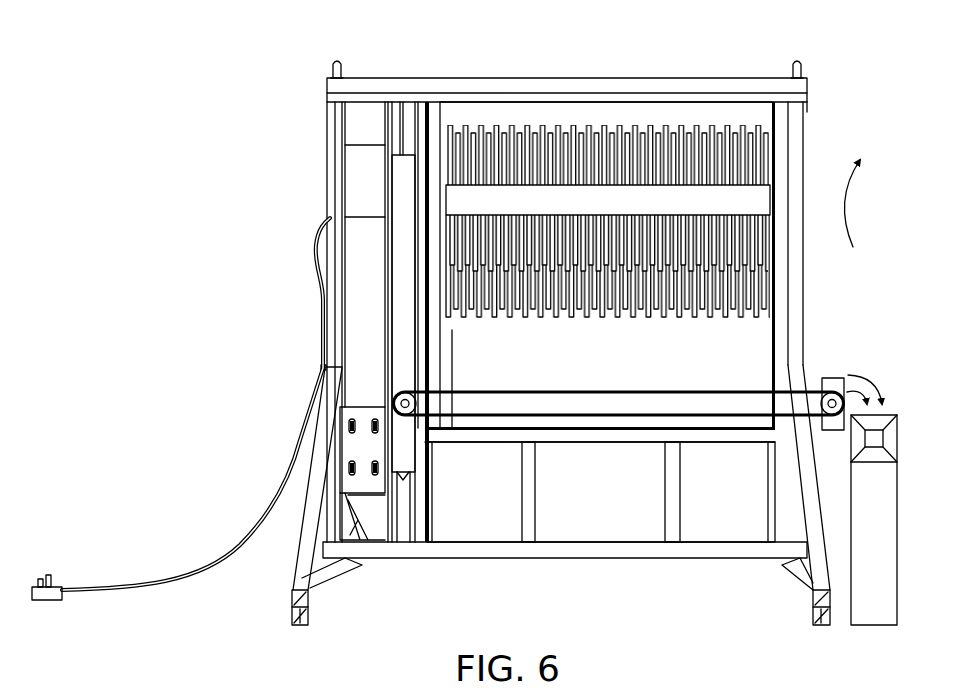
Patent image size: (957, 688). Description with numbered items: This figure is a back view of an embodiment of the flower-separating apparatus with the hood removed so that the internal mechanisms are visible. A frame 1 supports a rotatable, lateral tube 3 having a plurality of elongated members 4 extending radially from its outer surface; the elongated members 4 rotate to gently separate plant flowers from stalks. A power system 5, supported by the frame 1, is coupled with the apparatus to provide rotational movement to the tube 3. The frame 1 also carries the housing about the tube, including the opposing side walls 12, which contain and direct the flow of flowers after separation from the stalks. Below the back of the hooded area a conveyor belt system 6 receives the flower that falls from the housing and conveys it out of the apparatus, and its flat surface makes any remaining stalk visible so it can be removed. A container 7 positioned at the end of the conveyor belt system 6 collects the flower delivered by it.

The frame 1 is at (668, 90).
The rotatable lateral tube 3 is at (758, 201).
The elongated members 4 is at (527, 138).
The power system 5 is at (362, 448).
The conveyor belt system 6 is at (812, 393).
The container 7 is at (877, 608).
The side walls 12 is at (436, 348).